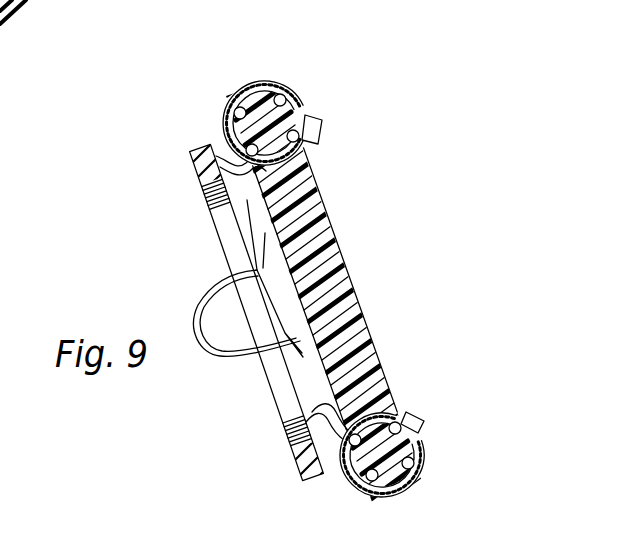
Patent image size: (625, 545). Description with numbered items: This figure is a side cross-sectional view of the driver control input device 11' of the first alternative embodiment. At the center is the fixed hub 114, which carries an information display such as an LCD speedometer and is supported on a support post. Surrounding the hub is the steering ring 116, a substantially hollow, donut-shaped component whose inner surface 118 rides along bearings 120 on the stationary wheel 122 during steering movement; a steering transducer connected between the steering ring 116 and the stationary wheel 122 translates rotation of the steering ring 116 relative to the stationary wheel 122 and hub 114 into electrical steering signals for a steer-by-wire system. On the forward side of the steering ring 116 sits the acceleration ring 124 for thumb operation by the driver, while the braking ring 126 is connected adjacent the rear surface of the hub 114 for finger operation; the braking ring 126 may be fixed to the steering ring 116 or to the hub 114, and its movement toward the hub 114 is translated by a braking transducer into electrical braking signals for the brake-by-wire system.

The driver control input device 11' is at (423, 320).
The fixed hub 114 is at (340, 241).
The steering ring 116 is at (282, 92).
The inner surface 118 is at (257, 88).
The bearings 120 is at (223, 127).
The stationary wheel 122 is at (303, 97).
The acceleration ring 124 is at (322, 127).
The braking ring 126 is at (297, 469).